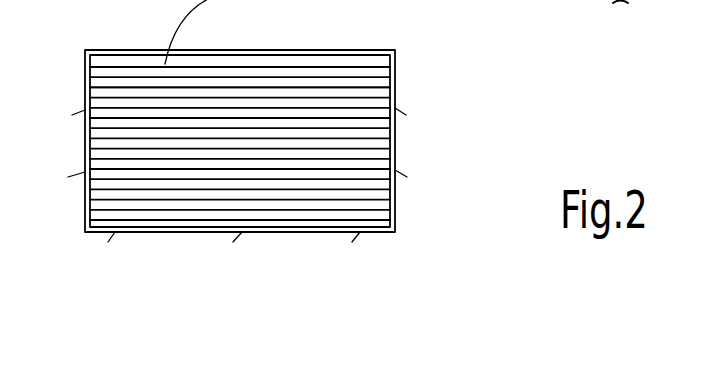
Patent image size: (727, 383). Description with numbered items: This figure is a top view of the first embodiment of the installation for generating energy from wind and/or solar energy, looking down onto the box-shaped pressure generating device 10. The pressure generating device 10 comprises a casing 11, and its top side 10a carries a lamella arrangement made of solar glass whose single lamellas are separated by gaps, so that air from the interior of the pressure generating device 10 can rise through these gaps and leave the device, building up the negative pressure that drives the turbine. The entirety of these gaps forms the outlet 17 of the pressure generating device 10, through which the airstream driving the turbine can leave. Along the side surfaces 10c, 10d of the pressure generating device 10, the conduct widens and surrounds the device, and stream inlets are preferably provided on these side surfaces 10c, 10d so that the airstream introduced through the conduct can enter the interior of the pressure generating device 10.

The pressure generating device 10 is at (307, 235).
The top side 10a is at (367, 195).
The side surface 10c is at (85, 137).
The side surface 10d is at (393, 138).
The casing 11 is at (319, 89).
The outlet 17 is at (293, 170).